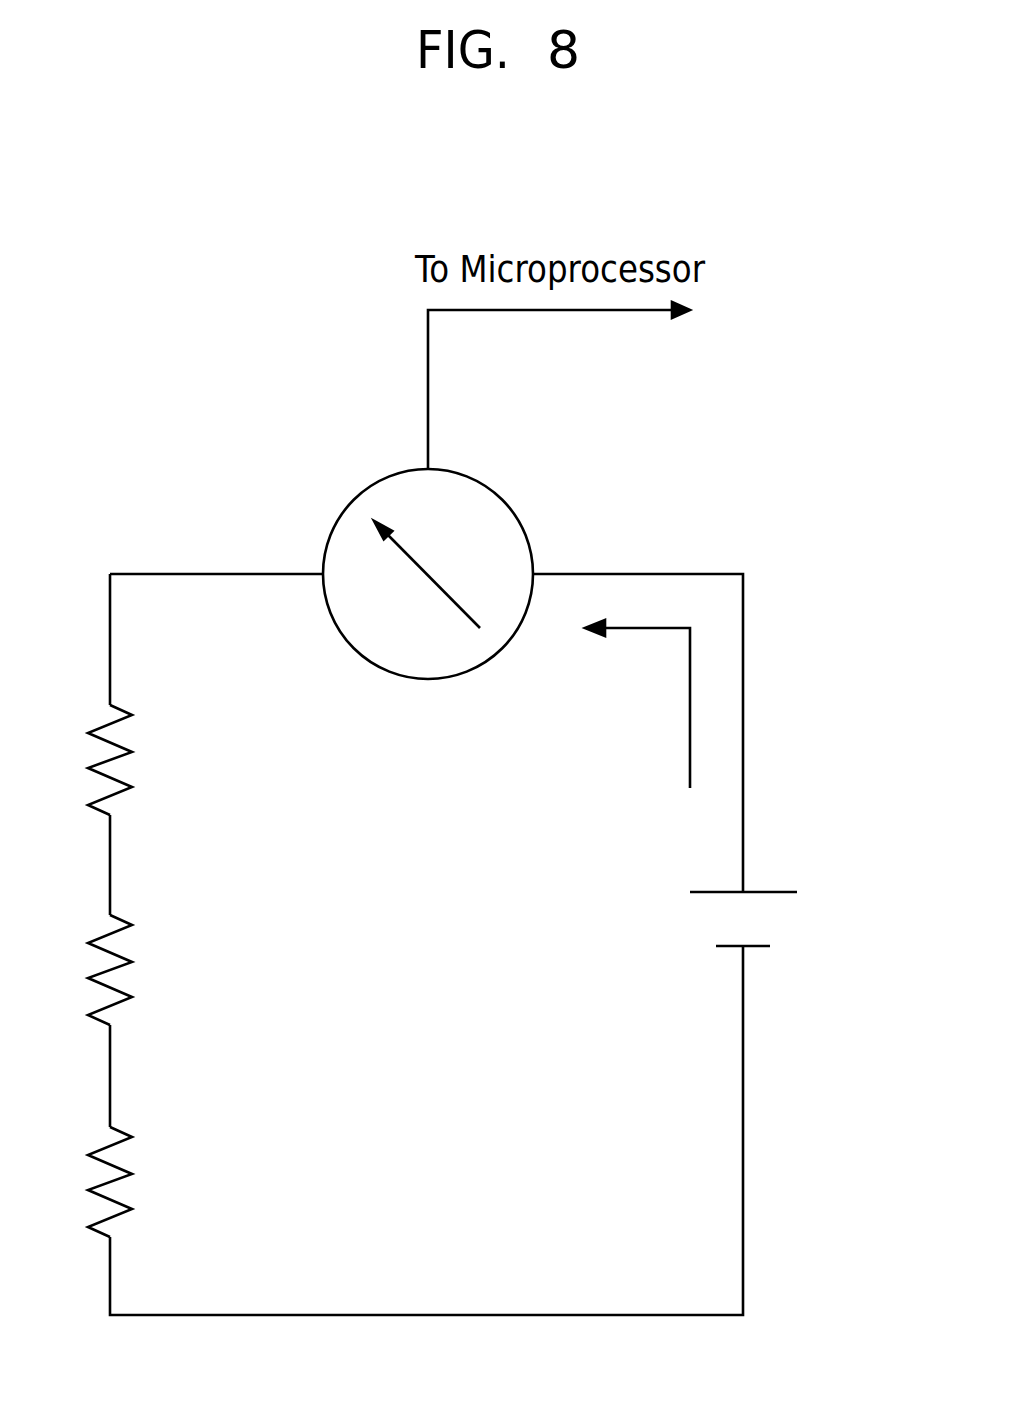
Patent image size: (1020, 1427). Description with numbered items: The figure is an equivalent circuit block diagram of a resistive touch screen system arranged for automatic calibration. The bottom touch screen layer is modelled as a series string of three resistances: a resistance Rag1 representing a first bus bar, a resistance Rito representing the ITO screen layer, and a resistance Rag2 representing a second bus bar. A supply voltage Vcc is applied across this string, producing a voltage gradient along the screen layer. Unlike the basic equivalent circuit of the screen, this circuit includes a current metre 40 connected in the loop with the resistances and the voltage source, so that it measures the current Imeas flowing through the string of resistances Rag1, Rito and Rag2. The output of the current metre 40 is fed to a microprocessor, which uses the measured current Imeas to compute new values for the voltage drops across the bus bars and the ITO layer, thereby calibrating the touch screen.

The current metre 40 is at (480, 483).
The resistance Rag1 is at (166, 760).
The resistance Rito is at (162, 970).
The resistance Rag2 is at (167, 1182).
The voltage Vcc is at (763, 942).
The current Imeas is at (634, 704).